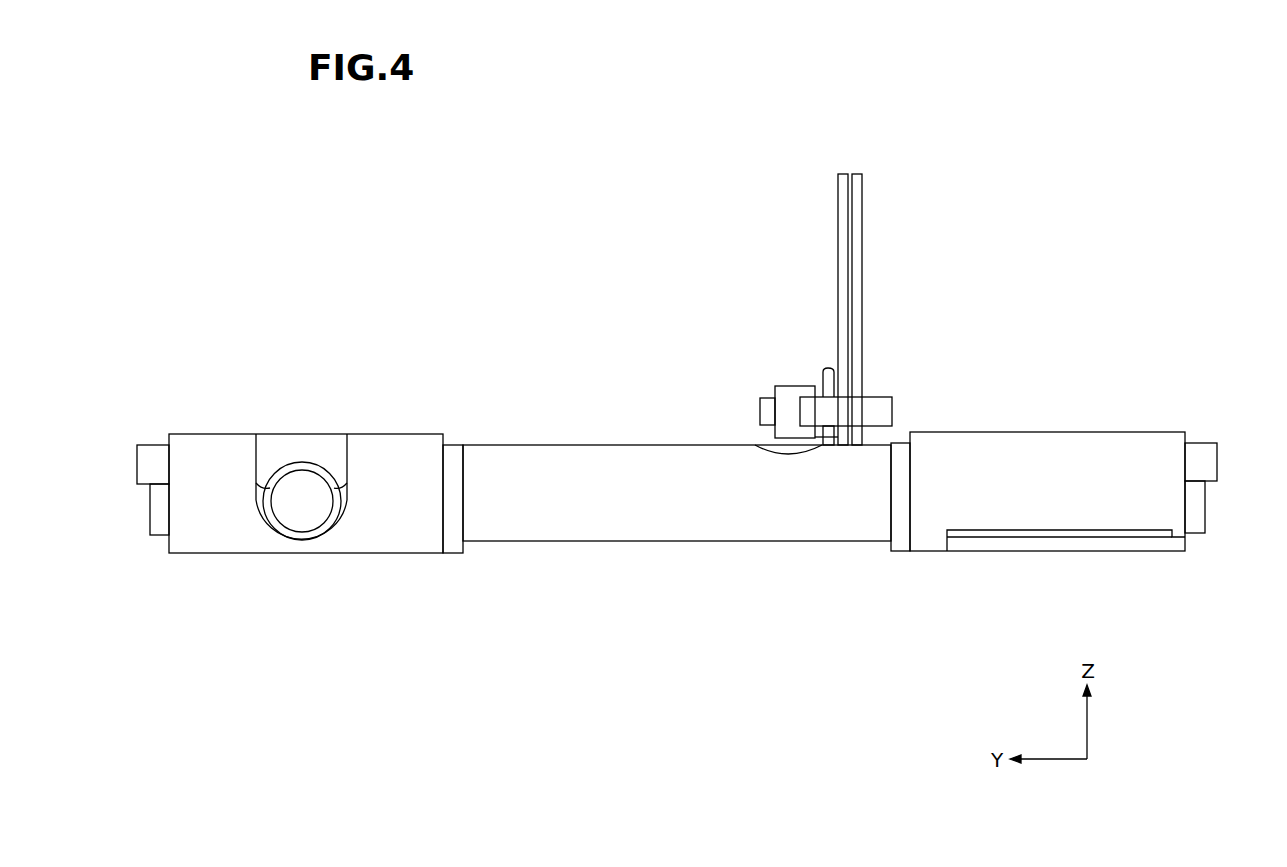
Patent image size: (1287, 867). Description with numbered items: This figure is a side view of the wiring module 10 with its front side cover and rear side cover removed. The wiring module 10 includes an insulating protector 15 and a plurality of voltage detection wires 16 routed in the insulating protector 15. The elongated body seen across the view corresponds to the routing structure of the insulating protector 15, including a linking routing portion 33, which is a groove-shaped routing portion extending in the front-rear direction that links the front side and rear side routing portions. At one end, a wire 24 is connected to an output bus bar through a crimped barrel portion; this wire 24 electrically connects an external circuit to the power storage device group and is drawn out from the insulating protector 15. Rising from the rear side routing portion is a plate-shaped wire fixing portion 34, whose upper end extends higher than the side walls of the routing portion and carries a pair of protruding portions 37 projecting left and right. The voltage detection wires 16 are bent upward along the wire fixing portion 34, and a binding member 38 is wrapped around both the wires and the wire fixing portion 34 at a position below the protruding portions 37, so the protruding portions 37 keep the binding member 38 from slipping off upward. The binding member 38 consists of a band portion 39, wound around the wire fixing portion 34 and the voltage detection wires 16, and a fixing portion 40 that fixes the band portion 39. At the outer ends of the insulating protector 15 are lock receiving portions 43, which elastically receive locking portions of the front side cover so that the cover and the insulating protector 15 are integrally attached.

The wiring module 10 is at (1011, 362).
The insulating protector 15 is at (952, 443).
The voltage detection wires 16 is at (846, 202).
The wire 24 is at (305, 510).
The linking routing portion 33 is at (658, 518).
The wire fixing portion 34 is at (770, 446).
The protruding portions 37 is at (820, 405).
The binding member 38 is at (754, 367).
The band portion 39 is at (822, 378).
The fixing portion 40 is at (774, 393).
The lock receiving portions 43 is at (150, 467).